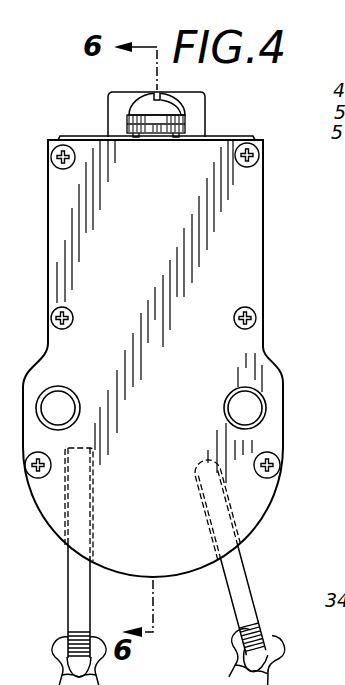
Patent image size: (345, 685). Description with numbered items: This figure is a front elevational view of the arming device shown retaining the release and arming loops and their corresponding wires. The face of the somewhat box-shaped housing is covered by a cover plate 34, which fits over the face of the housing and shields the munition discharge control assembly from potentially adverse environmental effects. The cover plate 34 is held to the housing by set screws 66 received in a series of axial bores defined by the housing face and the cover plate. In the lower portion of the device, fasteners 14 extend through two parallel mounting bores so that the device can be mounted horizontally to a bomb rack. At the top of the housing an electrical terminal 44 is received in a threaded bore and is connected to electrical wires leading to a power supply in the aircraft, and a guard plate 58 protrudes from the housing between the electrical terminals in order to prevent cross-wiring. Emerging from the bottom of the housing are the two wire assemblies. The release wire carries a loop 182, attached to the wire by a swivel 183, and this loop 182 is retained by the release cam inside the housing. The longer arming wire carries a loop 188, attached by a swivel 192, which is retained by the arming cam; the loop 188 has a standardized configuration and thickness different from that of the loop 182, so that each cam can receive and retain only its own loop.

The fasteners 14 is at (253, 409).
The cover plate 34 is at (267, 512).
The electrical terminal 44 is at (177, 107).
The guard plate 58 is at (200, 92).
The set screws 66 is at (278, 459).
The loop 182 is at (67, 585).
The swivels 183 is at (53, 650).
The loop 188 is at (238, 580).
The swivel 192 is at (278, 652).